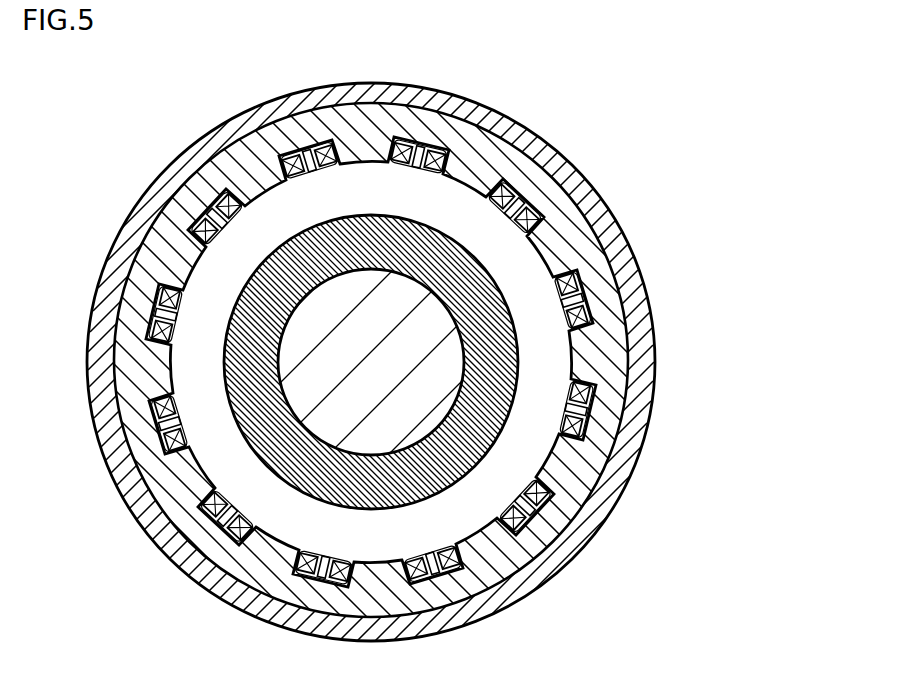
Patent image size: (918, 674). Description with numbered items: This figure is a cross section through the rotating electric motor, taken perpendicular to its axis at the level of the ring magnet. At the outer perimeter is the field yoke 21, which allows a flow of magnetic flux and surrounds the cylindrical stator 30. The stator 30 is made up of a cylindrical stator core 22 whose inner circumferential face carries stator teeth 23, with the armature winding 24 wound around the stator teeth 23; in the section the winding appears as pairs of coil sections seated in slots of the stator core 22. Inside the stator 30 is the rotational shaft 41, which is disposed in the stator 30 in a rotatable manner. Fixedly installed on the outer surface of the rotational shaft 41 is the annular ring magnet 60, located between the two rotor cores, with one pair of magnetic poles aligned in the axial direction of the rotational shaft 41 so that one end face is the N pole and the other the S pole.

The field yoke 21 is at (415, 100).
The stator core 22 is at (552, 197).
The stator teeth 23 is at (550, 250).
The armature winding 24 is at (577, 282).
The stator 30 is at (716, 192).
The rotational shaft 41 is at (418, 360).
The ring magnet 60 is at (488, 388).